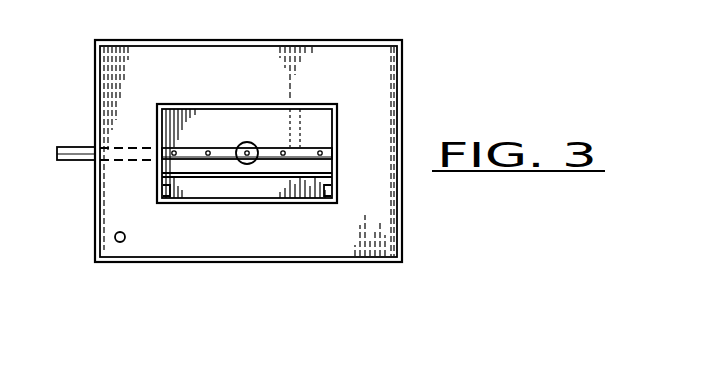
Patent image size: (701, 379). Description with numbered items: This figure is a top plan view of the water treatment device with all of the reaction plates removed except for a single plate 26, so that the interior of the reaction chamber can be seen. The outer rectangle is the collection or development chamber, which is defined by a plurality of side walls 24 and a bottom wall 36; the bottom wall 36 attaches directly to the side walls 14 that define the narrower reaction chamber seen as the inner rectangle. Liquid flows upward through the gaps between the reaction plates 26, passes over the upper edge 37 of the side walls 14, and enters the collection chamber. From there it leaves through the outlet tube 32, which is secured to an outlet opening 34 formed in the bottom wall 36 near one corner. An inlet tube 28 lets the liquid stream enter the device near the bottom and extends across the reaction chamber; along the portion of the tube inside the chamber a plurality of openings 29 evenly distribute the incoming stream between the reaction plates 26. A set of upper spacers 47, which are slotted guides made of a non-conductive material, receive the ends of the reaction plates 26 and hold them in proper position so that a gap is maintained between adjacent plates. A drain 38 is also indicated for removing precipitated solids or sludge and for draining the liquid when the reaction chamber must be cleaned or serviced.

The side walls 14 is at (338, 166).
The side walls 24 is at (245, 40).
The reaction plates 26 is at (320, 180).
The inlet tube 28 is at (85, 159).
The openings 29 is at (193, 148).
The outlet tube 32 is at (121, 241).
The outlet opening 34 is at (118, 241).
The bottom wall 36 is at (261, 100).
The upper edge 37 is at (175, 103).
The drain 38 is at (250, 177).
The upper spacers 47 is at (158, 195).